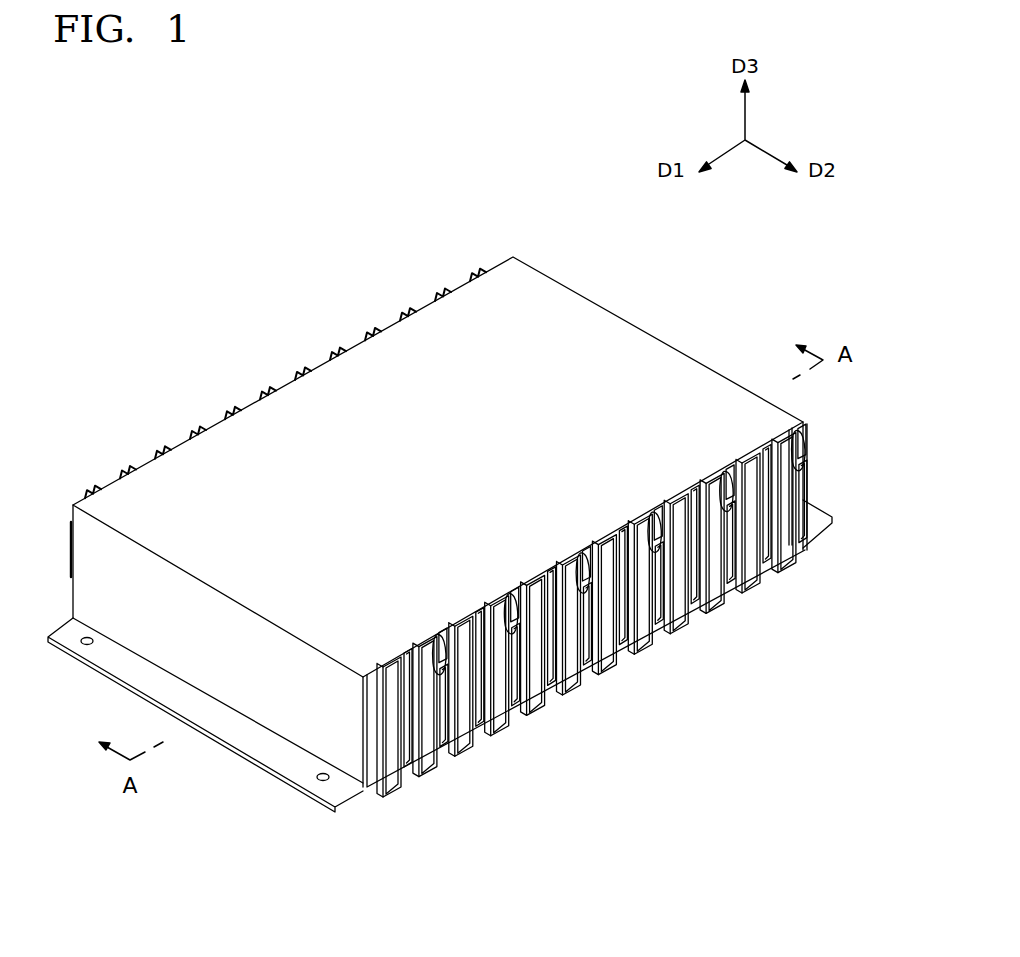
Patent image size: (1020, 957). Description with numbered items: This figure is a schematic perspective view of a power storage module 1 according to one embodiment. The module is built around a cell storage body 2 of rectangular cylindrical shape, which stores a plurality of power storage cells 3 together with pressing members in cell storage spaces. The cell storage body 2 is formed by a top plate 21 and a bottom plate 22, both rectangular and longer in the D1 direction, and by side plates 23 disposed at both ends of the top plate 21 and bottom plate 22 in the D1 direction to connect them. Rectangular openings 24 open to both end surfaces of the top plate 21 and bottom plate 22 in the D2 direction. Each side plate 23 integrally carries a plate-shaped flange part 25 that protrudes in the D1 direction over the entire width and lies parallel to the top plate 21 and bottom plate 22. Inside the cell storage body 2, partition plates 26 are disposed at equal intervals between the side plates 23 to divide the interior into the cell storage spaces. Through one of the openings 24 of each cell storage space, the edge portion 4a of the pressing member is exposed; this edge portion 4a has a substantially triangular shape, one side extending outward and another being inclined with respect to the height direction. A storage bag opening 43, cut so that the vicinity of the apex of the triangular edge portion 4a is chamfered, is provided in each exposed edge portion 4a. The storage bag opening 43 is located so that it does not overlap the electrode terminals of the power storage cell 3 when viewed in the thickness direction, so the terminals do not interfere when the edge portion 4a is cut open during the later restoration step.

The power storage module 1 is at (236, 253).
The cell storage body 2 is at (663, 330).
The power storage cell 3 is at (625, 636).
The edge portion 4a is at (427, 668).
The top plate 21 is at (420, 338).
The bottom plate 22 is at (385, 808).
The side plate 23 is at (283, 718).
The rectangular opening 24 is at (795, 443).
The flange part 25 is at (103, 672).
The partition plate 26 is at (437, 633).
The storage bag opening 43 is at (433, 634).